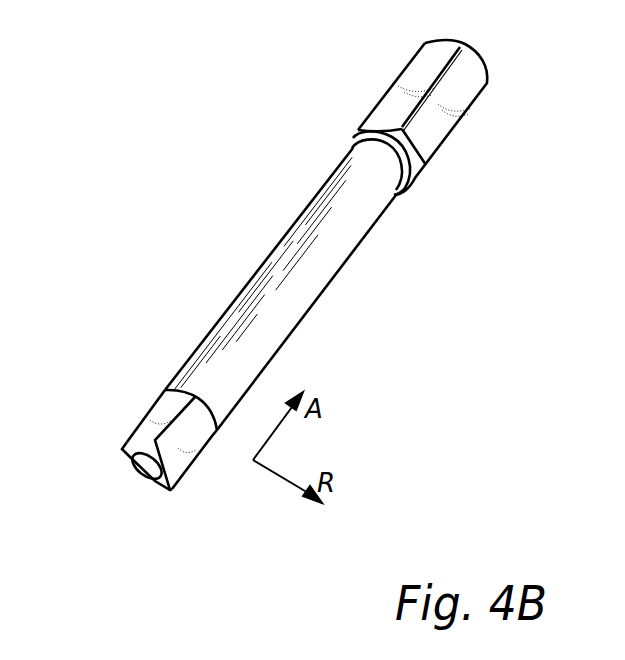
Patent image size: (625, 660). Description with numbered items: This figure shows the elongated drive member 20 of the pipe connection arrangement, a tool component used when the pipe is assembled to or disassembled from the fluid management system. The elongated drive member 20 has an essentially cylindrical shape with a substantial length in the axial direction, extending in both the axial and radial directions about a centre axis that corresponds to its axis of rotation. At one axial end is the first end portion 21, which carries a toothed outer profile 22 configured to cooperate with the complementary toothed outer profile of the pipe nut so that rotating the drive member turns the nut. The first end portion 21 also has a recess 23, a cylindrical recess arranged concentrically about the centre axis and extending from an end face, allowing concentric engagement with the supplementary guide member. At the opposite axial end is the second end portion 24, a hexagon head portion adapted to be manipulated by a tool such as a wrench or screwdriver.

The elongated drive member 20 is at (272, 278).
The first end portion 21 is at (251, 256).
The toothed outer profile 22 is at (128, 401).
The recess 23 is at (140, 470).
The second end portion 24 is at (398, 104).